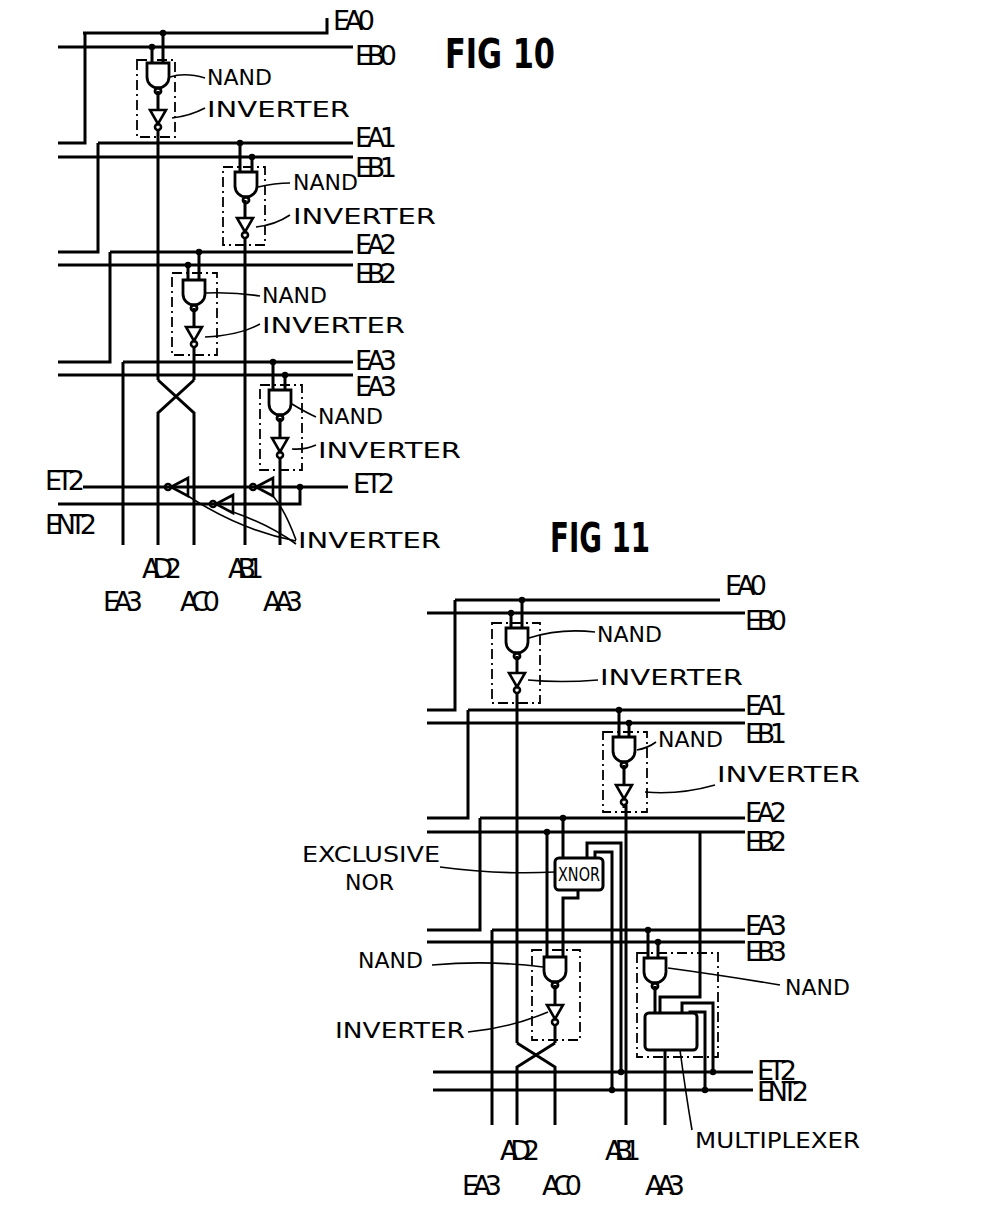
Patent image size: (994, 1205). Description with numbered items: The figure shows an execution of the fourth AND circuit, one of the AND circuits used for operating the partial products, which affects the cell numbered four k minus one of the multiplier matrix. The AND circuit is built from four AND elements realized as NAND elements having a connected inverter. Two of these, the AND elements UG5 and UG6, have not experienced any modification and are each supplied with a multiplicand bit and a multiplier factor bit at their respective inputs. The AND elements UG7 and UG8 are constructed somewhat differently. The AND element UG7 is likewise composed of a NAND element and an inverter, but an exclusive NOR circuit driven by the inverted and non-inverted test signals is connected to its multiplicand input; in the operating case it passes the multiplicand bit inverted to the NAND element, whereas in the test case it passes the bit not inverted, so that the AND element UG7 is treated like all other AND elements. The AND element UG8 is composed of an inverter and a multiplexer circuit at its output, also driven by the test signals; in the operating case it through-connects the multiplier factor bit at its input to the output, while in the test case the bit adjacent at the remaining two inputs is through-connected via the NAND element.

The AND element UG5 is at (532, 663).
The AND element UG6 is at (638, 775).
The AND element UG7 is at (532, 987).
The AND element UG8 is at (718, 993).